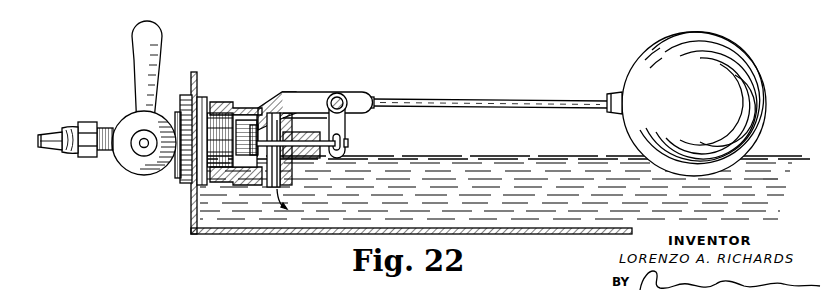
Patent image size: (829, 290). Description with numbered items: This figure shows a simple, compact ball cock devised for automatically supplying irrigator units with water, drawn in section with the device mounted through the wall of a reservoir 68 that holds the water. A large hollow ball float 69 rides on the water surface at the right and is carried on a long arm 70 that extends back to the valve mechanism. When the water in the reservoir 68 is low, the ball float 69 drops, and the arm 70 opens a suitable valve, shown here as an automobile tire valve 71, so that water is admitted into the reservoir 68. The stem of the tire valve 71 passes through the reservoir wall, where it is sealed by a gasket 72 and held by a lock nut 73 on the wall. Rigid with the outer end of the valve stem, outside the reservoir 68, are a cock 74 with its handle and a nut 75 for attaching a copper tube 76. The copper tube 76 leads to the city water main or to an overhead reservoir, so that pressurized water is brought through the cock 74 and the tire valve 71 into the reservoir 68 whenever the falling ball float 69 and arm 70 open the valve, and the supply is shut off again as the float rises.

The reservoir 68 is at (309, 221).
The ball float 69 is at (660, 47).
The arm 70 is at (476, 99).
The automobile tire valve 71 is at (279, 123).
The gasket 72 is at (187, 96).
The lock nut 73 is at (201, 97).
The cock 74 is at (132, 166).
The nut 75 is at (93, 158).
The copper tube 76 is at (55, 151).